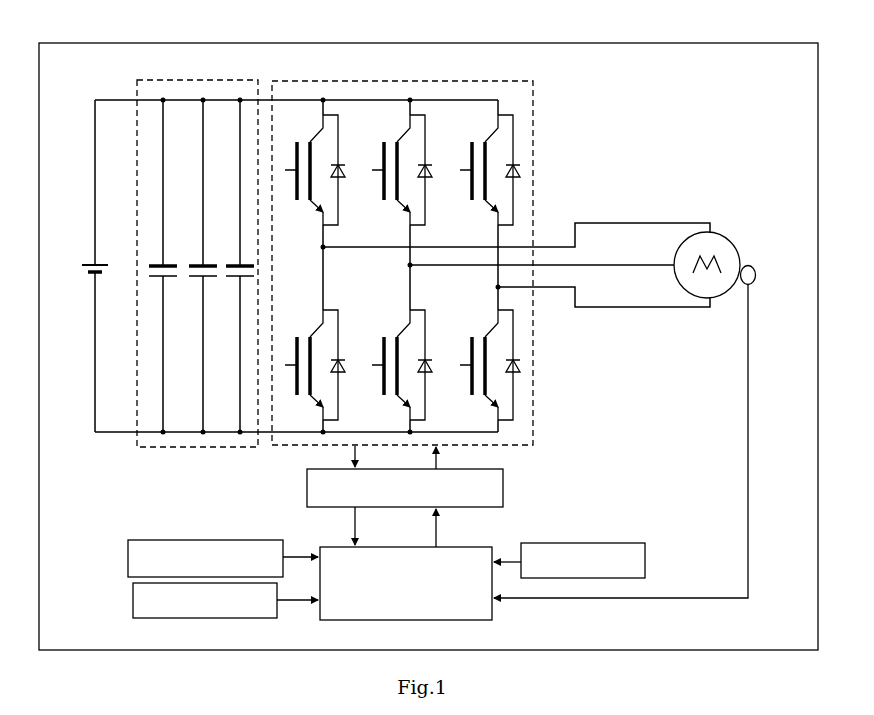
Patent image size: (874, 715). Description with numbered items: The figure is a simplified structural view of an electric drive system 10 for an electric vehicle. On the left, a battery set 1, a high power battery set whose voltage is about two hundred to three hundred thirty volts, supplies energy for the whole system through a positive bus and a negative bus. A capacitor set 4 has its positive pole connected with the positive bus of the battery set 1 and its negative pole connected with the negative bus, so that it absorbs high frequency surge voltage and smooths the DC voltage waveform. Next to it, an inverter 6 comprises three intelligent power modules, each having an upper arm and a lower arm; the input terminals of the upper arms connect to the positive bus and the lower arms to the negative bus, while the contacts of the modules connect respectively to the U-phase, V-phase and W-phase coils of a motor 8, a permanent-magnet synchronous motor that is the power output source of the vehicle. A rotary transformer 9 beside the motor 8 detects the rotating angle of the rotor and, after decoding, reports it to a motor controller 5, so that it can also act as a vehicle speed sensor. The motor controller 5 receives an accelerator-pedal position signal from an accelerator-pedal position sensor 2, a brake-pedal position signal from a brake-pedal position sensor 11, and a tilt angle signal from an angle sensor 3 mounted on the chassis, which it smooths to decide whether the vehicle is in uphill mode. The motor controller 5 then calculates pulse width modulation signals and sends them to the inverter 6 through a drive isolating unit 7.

The battery set 1 is at (78, 258).
The accelerator-pedal position sensor 2 is at (205, 540).
The angle sensor 3 is at (208, 618).
The capacitor set 4 is at (130, 83).
The motor controller 5 is at (440, 547).
The inverter 6 is at (535, 97).
The drive isolating unit 7 is at (503, 487).
The motor 8 is at (722, 238).
The rotary transformer 9 is at (757, 270).
The electric drive system 10 is at (403, 38).
The brake-pedal position sensor 11 is at (600, 543).